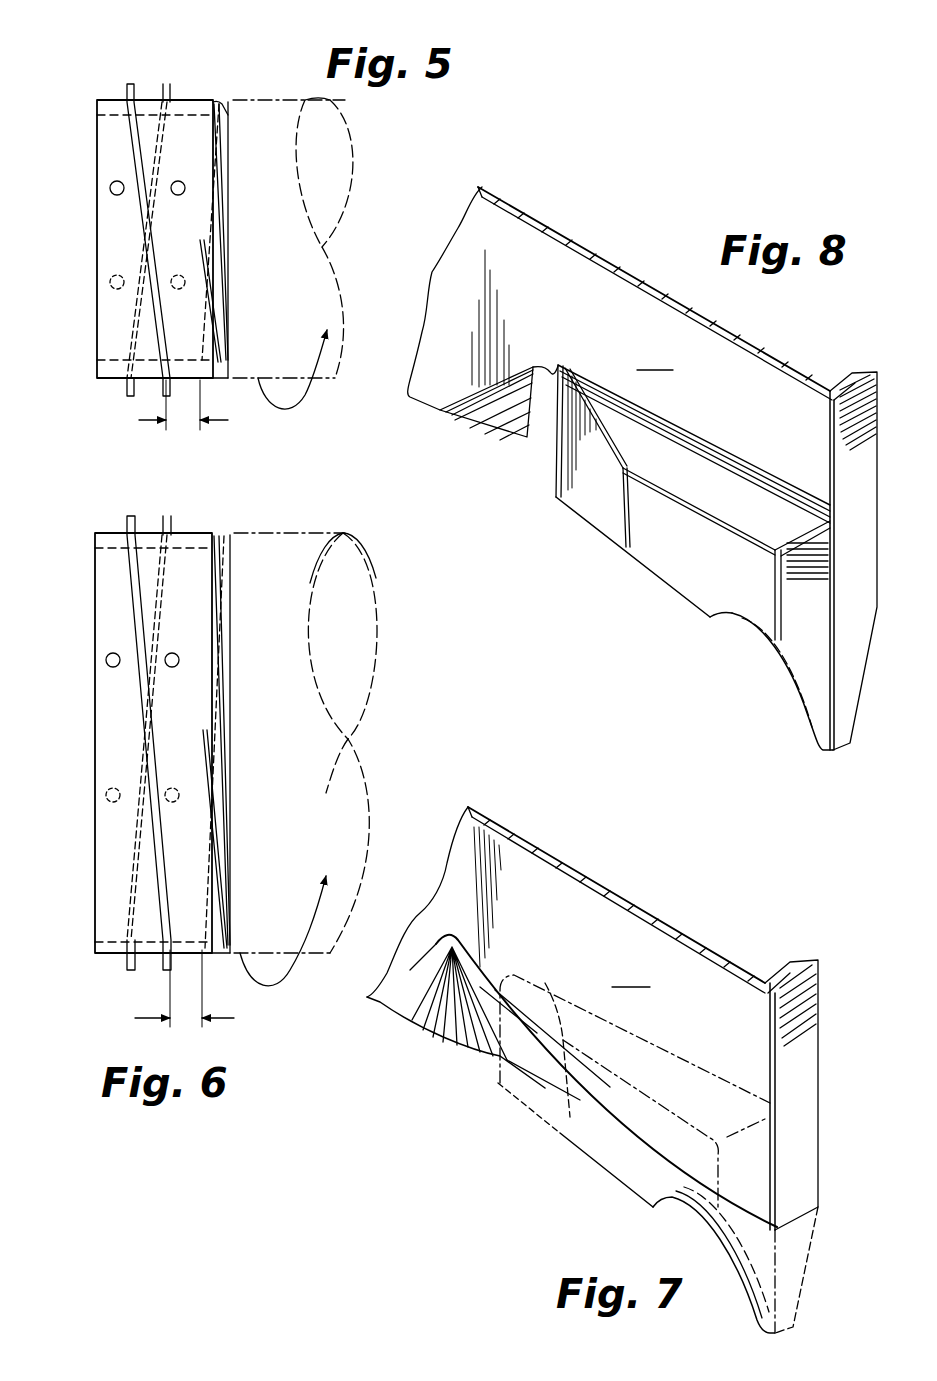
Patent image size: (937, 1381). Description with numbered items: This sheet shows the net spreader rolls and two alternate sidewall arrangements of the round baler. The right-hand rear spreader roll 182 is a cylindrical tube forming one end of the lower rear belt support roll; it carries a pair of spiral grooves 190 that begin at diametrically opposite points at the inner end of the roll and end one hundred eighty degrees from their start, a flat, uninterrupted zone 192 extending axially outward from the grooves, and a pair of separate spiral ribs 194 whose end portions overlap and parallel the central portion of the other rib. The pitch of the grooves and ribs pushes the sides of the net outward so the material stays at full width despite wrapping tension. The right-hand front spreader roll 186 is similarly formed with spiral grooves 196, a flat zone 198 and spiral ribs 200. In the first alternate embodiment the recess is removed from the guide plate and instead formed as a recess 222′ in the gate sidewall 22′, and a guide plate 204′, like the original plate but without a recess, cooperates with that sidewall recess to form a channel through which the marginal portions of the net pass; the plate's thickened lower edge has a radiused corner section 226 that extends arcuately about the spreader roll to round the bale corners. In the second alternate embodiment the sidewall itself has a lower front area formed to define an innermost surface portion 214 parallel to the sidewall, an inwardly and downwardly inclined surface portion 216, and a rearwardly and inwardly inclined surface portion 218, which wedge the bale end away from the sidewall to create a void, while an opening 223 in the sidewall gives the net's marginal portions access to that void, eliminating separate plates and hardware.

In FIG. 5, the right-hand rear spreader roll 182 is at (194, 86).
In FIG. 6, the right-hand front spreader roll 186 is at (196, 524).
In FIG. 5, the spiral grooves 190 is at (220, 160).
In FIG. 5, the flat zone 192 is at (184, 422).
In FIG. 5, the spiral ribs 194 is at (148, 259).
In FIG. 6, the spiral grooves 196 is at (226, 634).
In FIG. 6, the flat zone 198 is at (187, 1015).
In FIG. 6, the spiral ribs 200 is at (149, 516).
In FIG. 7, the gate sidewall 22′ is at (592, 1070).
In FIG. 7, the guide plate 204′ is at (637, 1200).
In FIG. 8, the central innermost surface portion 214 is at (670, 543).
In FIG. 8, the inwardly and downwardly inclined surface portion 216 is at (694, 464).
In FIG. 8, the rearwardly and inwardly inclined surface portion 218 is at (802, 627).
In FIG. 7, the sidewall recess 222′ is at (477, 1050).
In FIG. 8, the opening 223 is at (527, 442).
In FIG. 8, the radiused corner section 226 is at (750, 627).